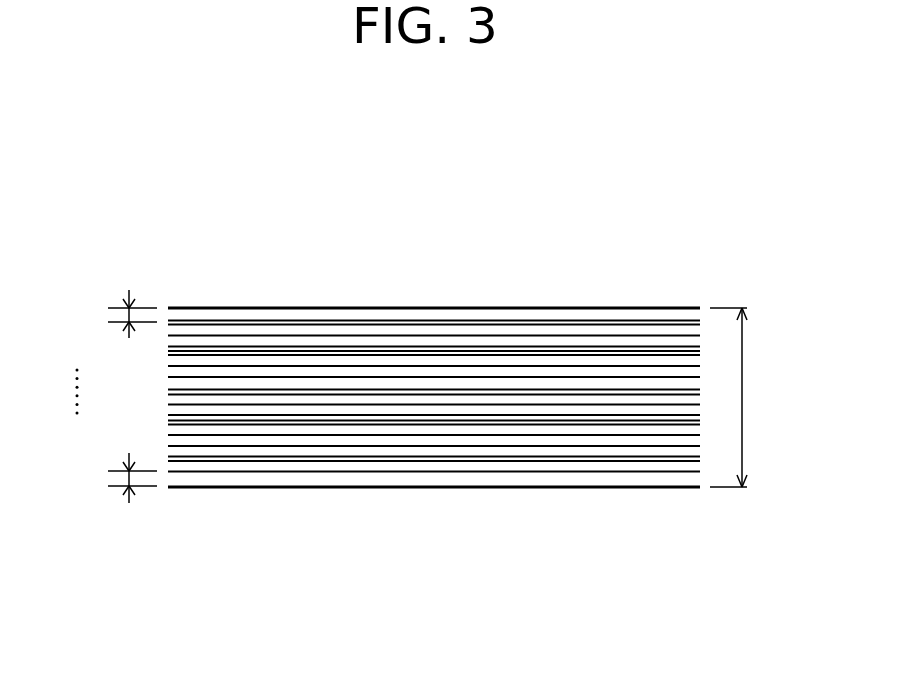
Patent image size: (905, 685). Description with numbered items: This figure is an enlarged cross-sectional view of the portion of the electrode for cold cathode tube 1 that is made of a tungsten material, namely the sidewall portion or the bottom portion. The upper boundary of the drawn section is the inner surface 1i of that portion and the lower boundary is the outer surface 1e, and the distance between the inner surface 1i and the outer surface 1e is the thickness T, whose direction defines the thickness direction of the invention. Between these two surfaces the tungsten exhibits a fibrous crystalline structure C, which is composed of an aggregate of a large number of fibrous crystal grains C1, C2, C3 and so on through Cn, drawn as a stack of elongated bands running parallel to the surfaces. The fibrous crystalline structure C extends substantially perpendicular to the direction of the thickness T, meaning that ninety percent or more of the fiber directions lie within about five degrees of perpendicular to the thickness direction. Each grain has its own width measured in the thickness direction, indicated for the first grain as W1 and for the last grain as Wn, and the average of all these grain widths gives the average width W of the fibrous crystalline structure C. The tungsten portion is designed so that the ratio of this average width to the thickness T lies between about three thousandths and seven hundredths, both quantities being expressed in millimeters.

The electrode for cold cathode tube 1 is at (732, 216).
The inner surface 1i is at (305, 308).
The outer surface 1e is at (317, 488).
The fibrous crystalline structure C is at (620, 233).
The fibrous crystal grain C1 is at (423, 317).
The fibrous crystal grain C2 is at (468, 328).
The fibrous crystal grain C3 is at (512, 333).
The fibrous crystal grain Cn is at (558, 487).
The width of fibrous crystal grain W1 is at (107, 314).
The width of fibrous crystal grain Wn is at (107, 478).
The thickness T is at (739, 397).